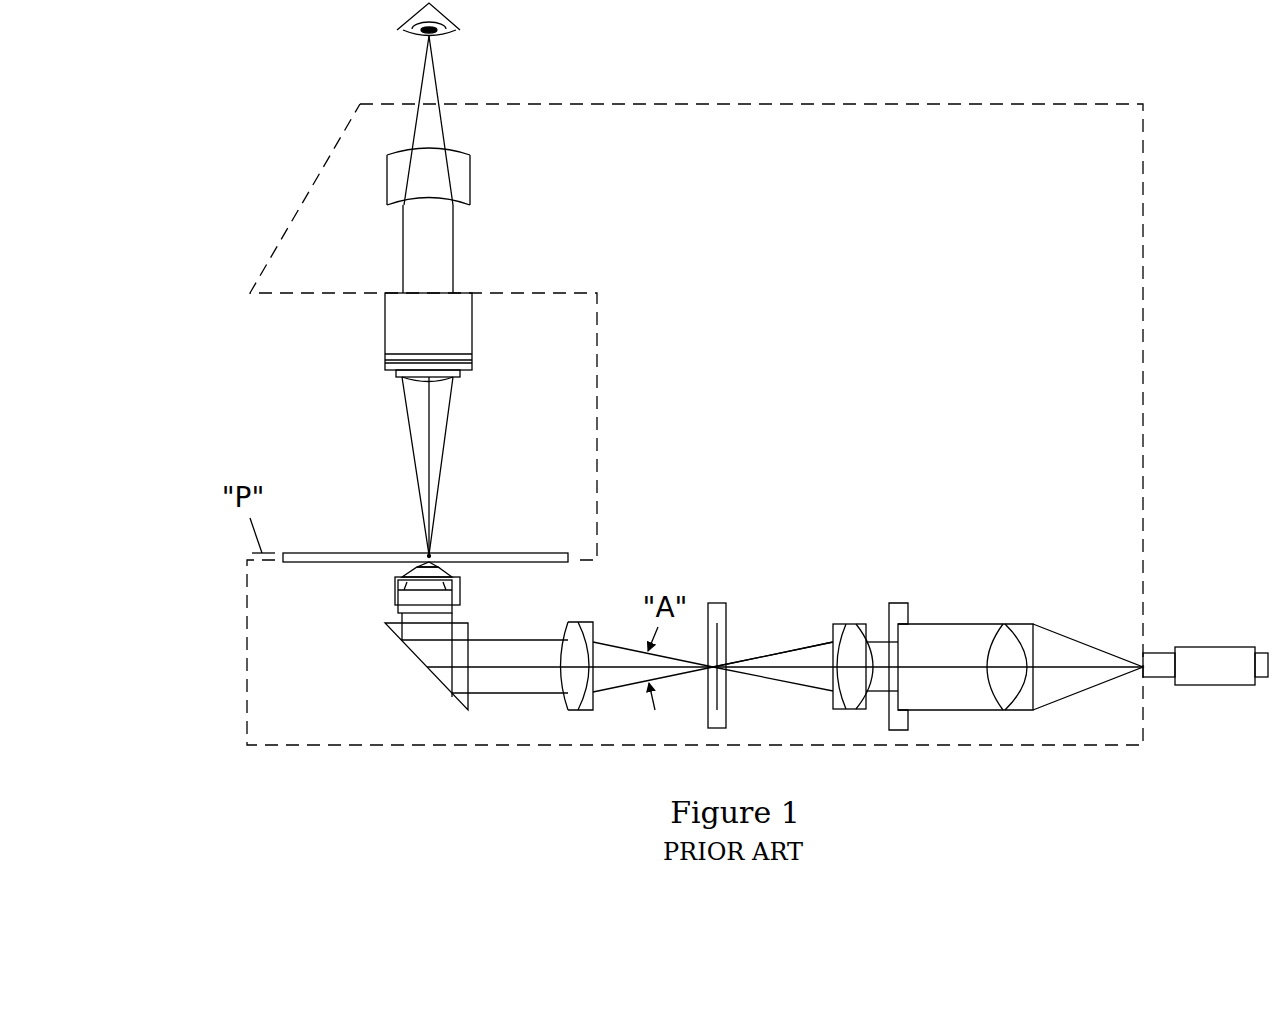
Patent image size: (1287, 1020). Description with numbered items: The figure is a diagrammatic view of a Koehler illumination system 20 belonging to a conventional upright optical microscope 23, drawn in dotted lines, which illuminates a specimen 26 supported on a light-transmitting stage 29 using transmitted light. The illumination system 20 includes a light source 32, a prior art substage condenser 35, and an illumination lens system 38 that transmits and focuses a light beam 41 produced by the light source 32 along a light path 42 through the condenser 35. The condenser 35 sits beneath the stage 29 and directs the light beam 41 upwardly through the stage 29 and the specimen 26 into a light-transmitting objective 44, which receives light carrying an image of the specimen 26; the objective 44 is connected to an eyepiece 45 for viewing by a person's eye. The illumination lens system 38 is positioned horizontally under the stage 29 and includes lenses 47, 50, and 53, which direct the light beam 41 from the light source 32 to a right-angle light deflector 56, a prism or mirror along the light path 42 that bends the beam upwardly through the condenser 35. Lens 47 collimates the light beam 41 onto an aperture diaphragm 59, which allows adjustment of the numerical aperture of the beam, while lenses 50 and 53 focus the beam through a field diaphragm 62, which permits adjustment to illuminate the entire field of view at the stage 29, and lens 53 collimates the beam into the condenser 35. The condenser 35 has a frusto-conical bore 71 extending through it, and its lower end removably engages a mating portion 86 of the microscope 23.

The Koehler illumination system 20 is at (816, 468).
The upright optical microscope 23 is at (743, 97).
The specimen 26 is at (433, 548).
The light-transmitting stage 29 is at (528, 547).
The light source 32 is at (1217, 625).
The substage condenser 35 is at (385, 590).
The illumination lens system 38 is at (1053, 728).
The light beam 41 is at (772, 645).
The light path 42 is at (434, 417).
The objective 44 is at (370, 345).
The eyepiece 45 is at (368, 162).
The lens 47 is at (1015, 610).
The lens 50 is at (848, 612).
The lens 53 is at (593, 615).
The right-angle light deflector 56 is at (418, 663).
The aperture diaphragm 59 is at (912, 593).
The field diaphragm 62 is at (718, 590).
The frusto-conical shaped bore 71 is at (398, 450).
The mating portion 86 is at (390, 615).